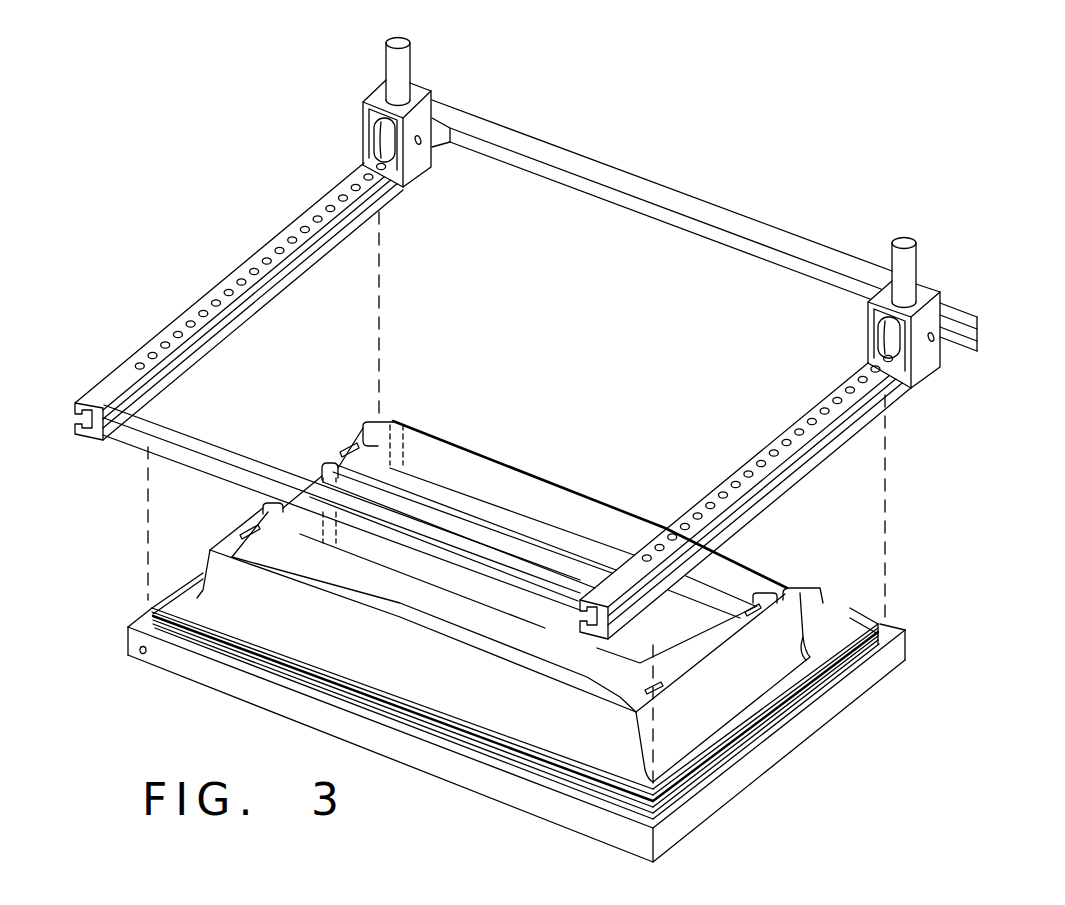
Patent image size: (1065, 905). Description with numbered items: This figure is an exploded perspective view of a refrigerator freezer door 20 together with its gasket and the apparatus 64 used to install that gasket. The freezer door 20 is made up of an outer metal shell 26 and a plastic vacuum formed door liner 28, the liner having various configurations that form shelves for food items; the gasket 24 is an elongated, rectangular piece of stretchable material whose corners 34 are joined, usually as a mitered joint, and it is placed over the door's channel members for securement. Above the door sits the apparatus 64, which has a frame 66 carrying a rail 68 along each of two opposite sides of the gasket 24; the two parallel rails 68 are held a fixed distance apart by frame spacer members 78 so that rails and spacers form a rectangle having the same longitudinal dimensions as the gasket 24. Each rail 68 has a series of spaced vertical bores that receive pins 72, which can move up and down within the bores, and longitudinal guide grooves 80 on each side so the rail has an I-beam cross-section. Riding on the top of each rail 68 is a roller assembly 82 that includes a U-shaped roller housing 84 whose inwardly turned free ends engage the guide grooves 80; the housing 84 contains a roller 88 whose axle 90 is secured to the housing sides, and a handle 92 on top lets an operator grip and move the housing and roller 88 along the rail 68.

The freezer door 20 is at (783, 762).
The gasket 24 is at (827, 670).
The outer metal shell 26 is at (573, 815).
The door liner 28 is at (248, 622).
The corners 34 is at (880, 620).
The apparatus 64 is at (794, 497).
The frame 66 is at (970, 358).
The rail 68 is at (810, 478).
The pins 72 is at (773, 457).
The frame spacer members 78 is at (643, 228).
The guide grooves 80 is at (747, 508).
The roller assembly 82 is at (919, 311).
The roller housing 84 is at (928, 368).
The roller 88 is at (867, 338).
The axle 90 is at (936, 338).
The handle 92 is at (891, 263).